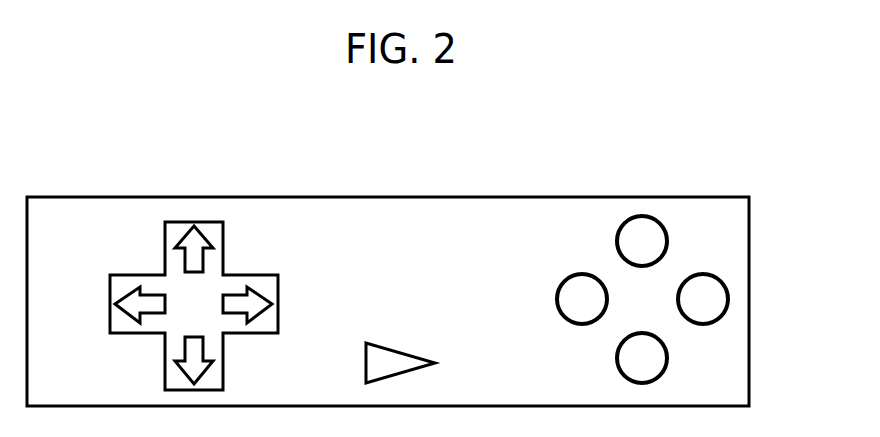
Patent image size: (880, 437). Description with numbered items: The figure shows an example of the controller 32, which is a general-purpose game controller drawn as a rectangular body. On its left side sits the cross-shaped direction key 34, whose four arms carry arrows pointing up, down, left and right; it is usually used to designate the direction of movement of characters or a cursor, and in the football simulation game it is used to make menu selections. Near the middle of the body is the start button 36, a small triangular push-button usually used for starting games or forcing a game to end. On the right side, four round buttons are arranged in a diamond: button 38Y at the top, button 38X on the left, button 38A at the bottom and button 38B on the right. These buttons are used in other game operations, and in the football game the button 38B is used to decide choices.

The controller 32 is at (92, 196).
The direction key 34 is at (224, 243).
The start button 36 is at (366, 366).
The button 38Y is at (617, 241).
The button 38X is at (557, 298).
The button 38A is at (617, 358).
The button 38B is at (729, 299).